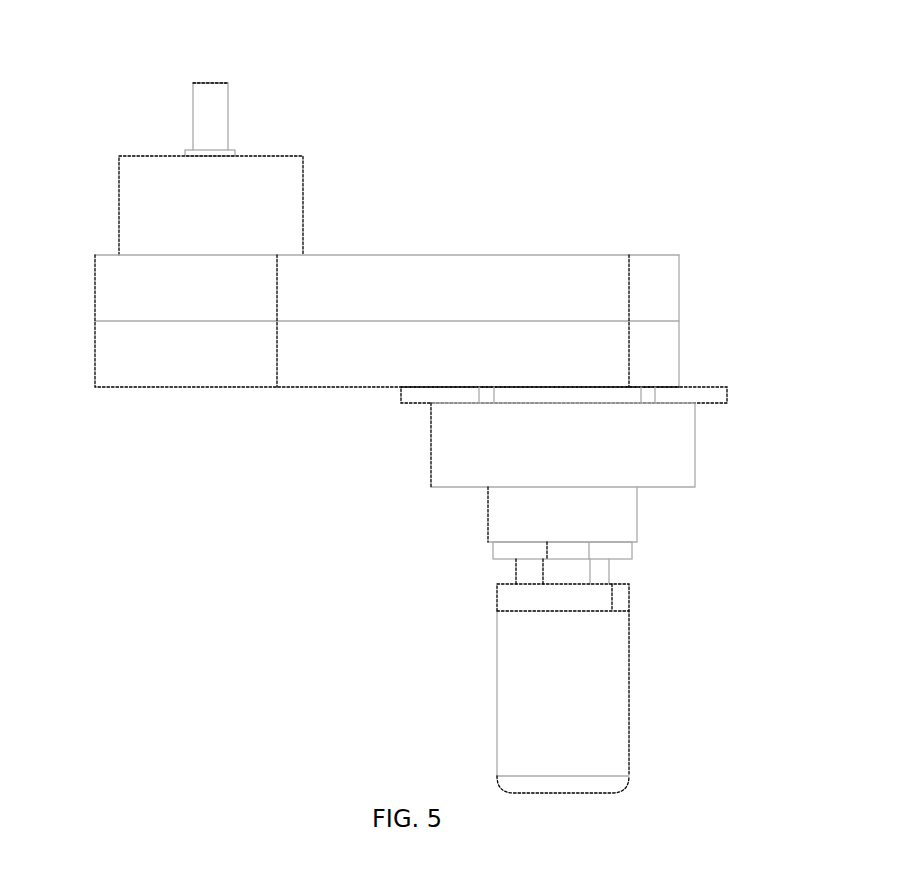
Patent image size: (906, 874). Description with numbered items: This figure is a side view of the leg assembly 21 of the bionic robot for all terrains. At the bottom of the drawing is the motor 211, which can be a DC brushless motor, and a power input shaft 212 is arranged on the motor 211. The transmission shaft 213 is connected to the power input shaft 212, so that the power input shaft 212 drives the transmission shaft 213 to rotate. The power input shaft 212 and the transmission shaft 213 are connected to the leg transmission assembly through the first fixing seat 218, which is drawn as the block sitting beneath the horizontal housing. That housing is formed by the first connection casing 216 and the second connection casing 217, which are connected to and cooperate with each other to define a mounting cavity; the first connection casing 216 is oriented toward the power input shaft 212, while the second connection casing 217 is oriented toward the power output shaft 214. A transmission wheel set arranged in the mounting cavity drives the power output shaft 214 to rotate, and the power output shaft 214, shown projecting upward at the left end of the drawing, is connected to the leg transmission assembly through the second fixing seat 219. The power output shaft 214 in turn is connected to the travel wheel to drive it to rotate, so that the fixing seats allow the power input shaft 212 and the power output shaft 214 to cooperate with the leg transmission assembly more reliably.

The leg assembly 21 is at (682, 54).
The motor 211 is at (604, 674).
The power input shaft 212 is at (600, 568).
The transmission shaft 213 is at (615, 513).
The power output shaft 214 is at (205, 112).
The first connection casing 216 is at (585, 352).
The second connection casing 217 is at (500, 287).
The first fixing seat 218 is at (675, 440).
The second fixing seat 219 is at (150, 207).